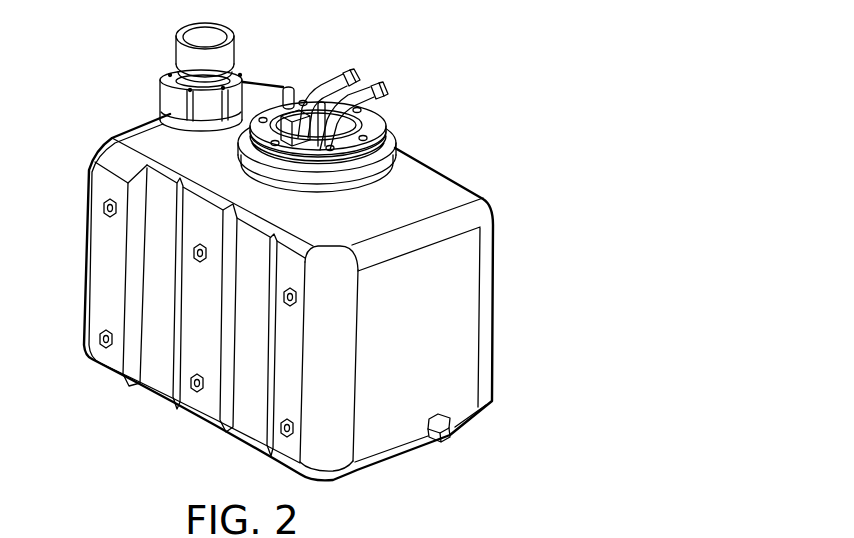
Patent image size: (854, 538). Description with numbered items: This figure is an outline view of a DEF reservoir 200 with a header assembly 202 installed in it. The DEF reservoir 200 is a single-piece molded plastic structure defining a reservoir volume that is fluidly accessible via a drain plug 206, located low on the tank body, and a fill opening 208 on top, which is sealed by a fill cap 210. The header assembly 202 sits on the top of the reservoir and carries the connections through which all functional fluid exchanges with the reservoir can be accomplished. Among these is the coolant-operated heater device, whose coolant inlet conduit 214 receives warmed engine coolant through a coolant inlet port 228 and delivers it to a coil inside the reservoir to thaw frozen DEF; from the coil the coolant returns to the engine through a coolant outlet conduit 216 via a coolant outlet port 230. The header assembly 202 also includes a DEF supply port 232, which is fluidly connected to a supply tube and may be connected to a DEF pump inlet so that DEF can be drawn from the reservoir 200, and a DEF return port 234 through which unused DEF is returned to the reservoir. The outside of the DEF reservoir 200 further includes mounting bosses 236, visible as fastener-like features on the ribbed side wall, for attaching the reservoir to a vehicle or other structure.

The DEF reservoir 200 is at (432, 204).
The header assembly 202 is at (448, 80).
The drain plug 206 is at (451, 443).
The fill opening 208 is at (150, 97).
The fill cap 210 is at (197, 32).
The coolant inlet conduit 214 is at (364, 103).
The coolant outlet conduit 216 is at (331, 81).
The coolant inlet port 228 is at (375, 84).
The coolant outlet port 230 is at (362, 74).
The DEF supply port 232 is at (392, 90).
The DEF return port 234 is at (287, 90).
The mounting bosses 236 is at (102, 341).